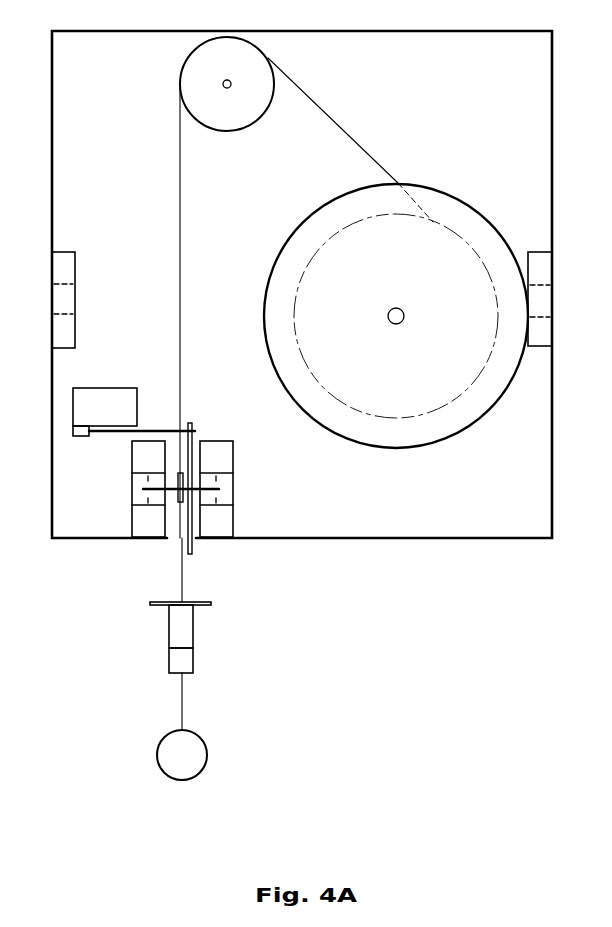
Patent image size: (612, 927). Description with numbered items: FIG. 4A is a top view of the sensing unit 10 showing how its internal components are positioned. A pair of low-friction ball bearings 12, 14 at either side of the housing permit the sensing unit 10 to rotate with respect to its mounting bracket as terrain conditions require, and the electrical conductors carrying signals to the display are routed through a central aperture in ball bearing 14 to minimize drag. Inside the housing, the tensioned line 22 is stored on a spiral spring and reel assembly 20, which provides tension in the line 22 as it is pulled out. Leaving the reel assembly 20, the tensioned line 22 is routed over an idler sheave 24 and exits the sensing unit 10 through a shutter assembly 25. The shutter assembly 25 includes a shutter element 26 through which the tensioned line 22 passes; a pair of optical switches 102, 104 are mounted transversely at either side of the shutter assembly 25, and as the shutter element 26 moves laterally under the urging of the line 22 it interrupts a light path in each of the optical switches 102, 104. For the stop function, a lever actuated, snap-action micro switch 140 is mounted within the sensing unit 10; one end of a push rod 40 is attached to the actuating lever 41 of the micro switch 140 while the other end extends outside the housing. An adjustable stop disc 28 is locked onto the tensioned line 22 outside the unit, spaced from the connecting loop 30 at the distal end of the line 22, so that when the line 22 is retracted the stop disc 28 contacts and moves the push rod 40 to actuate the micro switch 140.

The sensing unit 10 is at (293, 26).
The ball bearing 12 is at (546, 250).
The ball bearing 14 is at (66, 253).
The spiral spring and reel assembly 20 is at (480, 206).
The tensioned line 22 is at (323, 110).
The idler sheave 24 is at (240, 133).
The shutter assembly 25 is at (253, 521).
The shutter element 26 is at (220, 489).
The adjustable stop disc 28 is at (195, 638).
The connecting loop 30 is at (207, 741).
The push rod 40 is at (193, 418).
The actuating lever 41 is at (162, 423).
The optical switch 102 is at (128, 465).
The optical switch 104 is at (238, 462).
The micro switch 140 is at (83, 386).